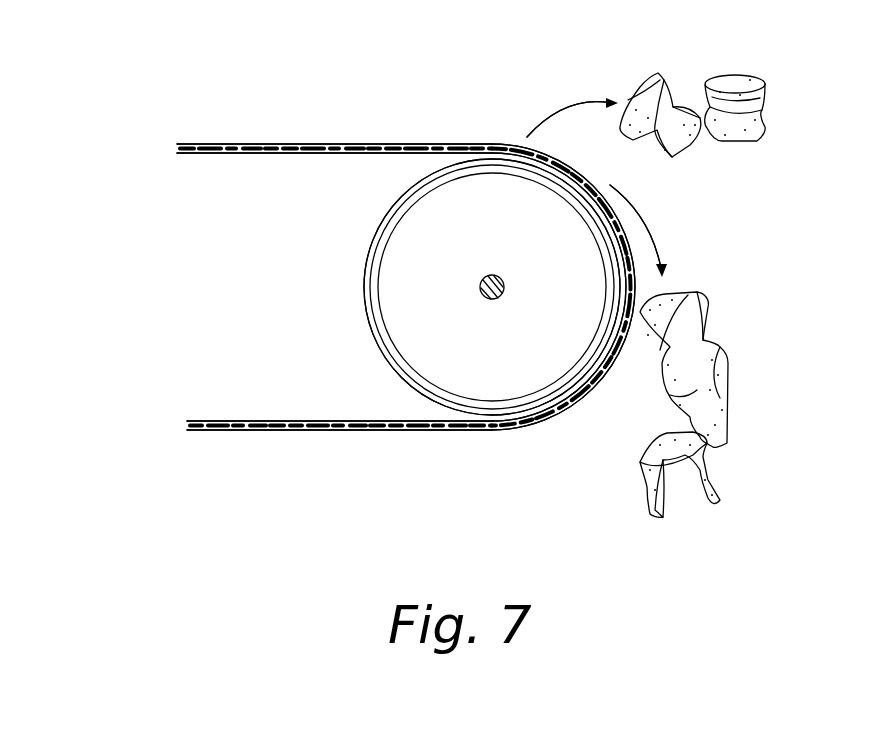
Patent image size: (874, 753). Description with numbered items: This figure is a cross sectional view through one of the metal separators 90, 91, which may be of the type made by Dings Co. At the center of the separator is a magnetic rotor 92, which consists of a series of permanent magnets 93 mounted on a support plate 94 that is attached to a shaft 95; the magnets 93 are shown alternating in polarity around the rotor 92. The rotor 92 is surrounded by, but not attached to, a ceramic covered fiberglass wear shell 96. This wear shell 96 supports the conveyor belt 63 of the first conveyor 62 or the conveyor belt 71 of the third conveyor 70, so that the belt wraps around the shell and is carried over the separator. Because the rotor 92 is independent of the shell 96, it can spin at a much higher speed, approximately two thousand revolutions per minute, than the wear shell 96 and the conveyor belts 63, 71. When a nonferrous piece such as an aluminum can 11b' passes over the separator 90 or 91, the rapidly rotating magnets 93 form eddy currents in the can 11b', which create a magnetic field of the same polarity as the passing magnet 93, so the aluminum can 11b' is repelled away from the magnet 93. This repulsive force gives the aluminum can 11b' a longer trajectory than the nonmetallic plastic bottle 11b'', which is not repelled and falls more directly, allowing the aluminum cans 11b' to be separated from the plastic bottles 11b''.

The first metal separator 90 is at (326, 320).
The second metal separator 91 is at (326, 320).
The magnetic rotor 92 is at (417, 313).
The permanent magnets 93 is at (432, 167).
The support plate 94 is at (407, 357).
The shaft 95 is at (526, 246).
The wear shell 96 is at (403, 387).
The first conveyor 62 is at (696, 209).
The third conveyor 70 is at (696, 209).
The conveyor belt 63 is at (327, 432).
The conveyor belt 71 is at (327, 432).
The aluminum can 11b' is at (727, 99).
The nonmetallic plastic bottle 11b'' is at (749, 404).